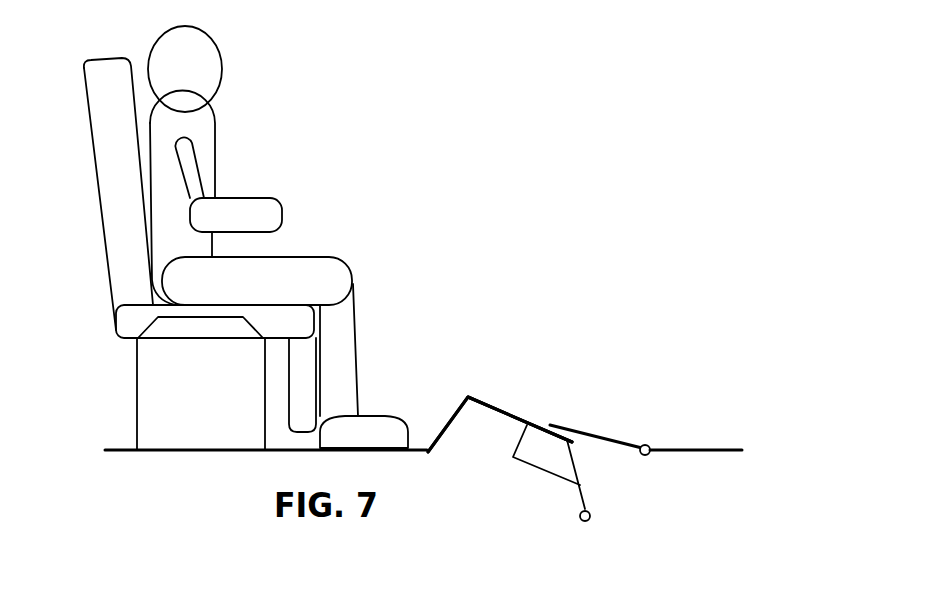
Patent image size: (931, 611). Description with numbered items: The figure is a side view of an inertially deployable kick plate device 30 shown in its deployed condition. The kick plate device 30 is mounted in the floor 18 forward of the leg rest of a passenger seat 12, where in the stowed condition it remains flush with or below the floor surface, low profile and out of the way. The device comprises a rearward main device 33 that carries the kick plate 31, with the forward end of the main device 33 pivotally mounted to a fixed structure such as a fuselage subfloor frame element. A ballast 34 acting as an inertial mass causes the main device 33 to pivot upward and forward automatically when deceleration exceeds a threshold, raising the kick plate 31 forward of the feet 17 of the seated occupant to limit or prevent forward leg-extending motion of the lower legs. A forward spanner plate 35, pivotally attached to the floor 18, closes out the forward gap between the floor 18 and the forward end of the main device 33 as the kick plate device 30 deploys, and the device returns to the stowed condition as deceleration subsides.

The passenger seat 12 is at (128, 322).
The feet 17 is at (378, 415).
The floor 18 is at (695, 447).
The kick plate device 30 is at (656, 504).
The kick plate 31 is at (450, 407).
The main device 33 is at (492, 402).
The ballast 34 is at (523, 462).
The spanner plate 35 is at (602, 432).